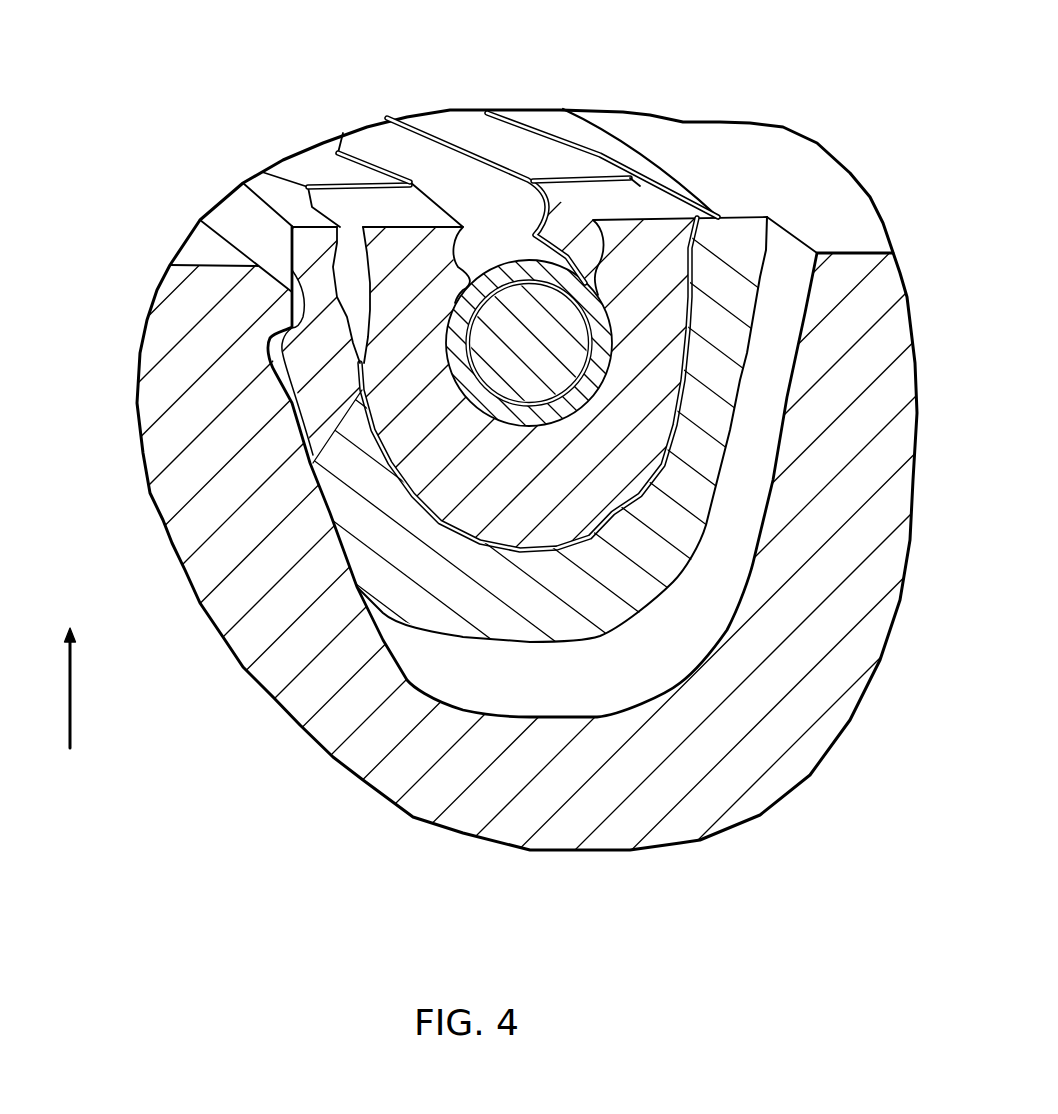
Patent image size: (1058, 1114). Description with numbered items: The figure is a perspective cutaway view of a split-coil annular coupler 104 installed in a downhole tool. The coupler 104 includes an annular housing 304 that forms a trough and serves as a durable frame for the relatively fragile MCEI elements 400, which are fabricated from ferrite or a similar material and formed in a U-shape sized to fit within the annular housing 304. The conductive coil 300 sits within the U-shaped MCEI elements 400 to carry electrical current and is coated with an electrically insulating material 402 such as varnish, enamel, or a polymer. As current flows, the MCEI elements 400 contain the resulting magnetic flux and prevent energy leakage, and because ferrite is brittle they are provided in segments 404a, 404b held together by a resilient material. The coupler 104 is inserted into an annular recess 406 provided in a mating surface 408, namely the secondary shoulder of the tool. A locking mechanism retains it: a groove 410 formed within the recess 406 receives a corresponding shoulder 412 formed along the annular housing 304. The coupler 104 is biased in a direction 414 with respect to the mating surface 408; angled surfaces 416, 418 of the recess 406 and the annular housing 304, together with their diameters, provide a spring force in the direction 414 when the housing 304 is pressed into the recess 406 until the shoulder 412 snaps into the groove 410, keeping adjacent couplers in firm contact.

The split-coil annular coupler 104 is at (298, 74).
The conductive coil 300 is at (552, 354).
The annular housing 304 is at (553, 608).
The MCEI elements 400 is at (551, 499).
The electrically insulating material 402 is at (598, 330).
The segment 404a is at (648, 207).
The segment 404b is at (527, 150).
The annular recess 406 is at (622, 725).
The mating surface 408 is at (794, 179).
The groove 410 is at (258, 338).
The shoulder 412 is at (288, 341).
The direction 414 is at (72, 708).
The angled surface 416 is at (302, 463).
The angled surface 418 is at (330, 456).